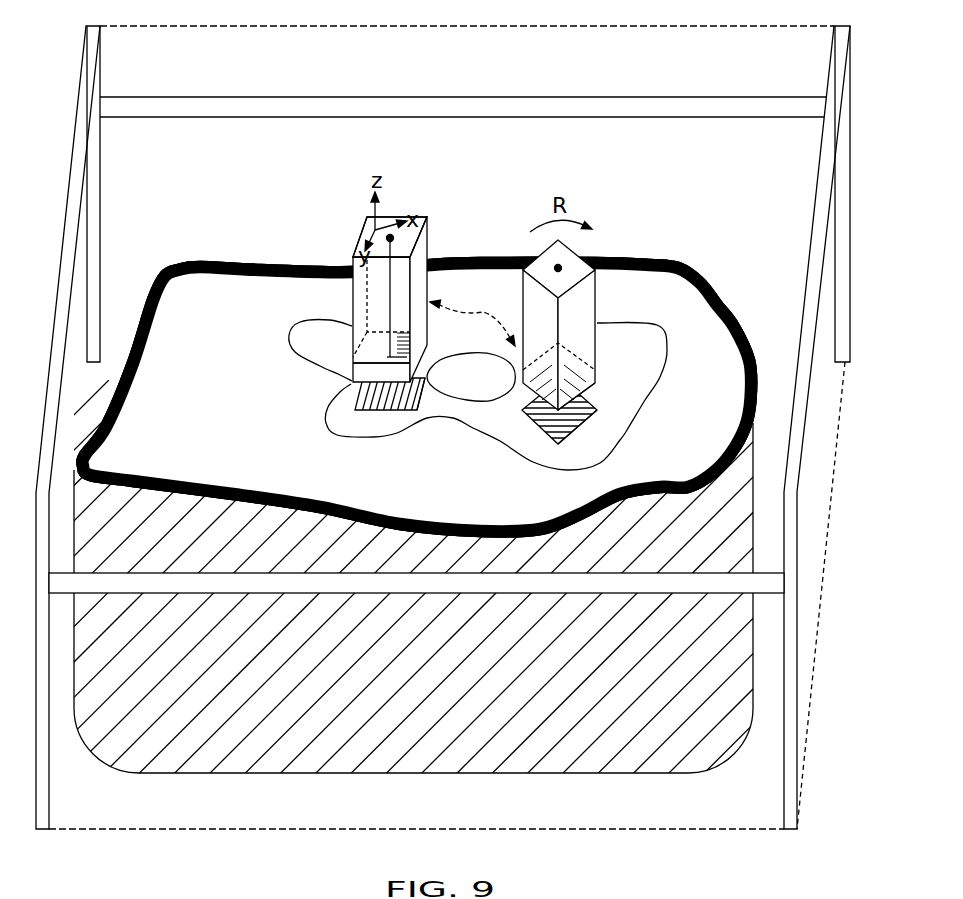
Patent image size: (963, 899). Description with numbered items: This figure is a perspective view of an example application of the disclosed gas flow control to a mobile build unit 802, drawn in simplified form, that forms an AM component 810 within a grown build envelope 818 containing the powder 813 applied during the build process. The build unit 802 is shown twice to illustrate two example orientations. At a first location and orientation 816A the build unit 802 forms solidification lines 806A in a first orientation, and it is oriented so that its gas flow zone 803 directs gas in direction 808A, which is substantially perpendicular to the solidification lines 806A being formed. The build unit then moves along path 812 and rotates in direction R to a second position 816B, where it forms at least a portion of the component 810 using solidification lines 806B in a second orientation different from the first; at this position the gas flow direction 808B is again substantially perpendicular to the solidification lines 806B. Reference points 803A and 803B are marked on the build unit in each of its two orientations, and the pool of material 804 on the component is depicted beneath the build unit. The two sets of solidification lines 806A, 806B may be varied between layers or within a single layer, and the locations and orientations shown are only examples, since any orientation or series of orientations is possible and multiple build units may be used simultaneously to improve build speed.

The mobile build unit 802 is at (365, 240).
The gas flow zone 803 is at (362, 373).
The reference point of first probe 803A is at (394, 238).
The reference point of second probe 803B is at (561, 266).
The fluid pool 804 is at (323, 421).
The solidification lines in first orientation 806A is at (413, 398).
The solidification lines in second orientation 806B is at (585, 425).
The first gas flow direction 808A is at (388, 384).
The second gas flow direction 808B is at (550, 414).
The AM component 810 is at (651, 342).
The path 812 is at (483, 316).
The powder 813 is at (677, 290).
The first location and orientation 816A is at (353, 258).
The second position 816B is at (525, 266).
The grown build envelope 818 is at (653, 255).